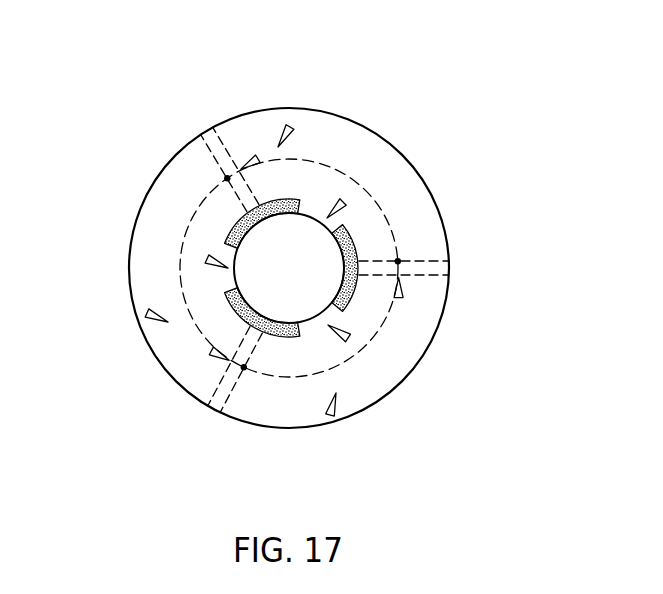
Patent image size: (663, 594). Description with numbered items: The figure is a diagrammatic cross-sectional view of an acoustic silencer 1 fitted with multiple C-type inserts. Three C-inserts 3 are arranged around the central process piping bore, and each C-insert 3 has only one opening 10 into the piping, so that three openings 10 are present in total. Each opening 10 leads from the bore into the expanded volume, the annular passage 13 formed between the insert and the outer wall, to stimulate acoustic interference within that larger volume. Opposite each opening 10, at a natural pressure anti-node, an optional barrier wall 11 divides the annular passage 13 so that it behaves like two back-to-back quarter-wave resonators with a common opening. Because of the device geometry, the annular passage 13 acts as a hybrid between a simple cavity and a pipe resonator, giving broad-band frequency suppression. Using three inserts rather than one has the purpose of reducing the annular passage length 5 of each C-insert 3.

The acoustic silencer 1 is at (180, 148).
The C-insert 3 is at (282, 198).
The passage length 5 is at (198, 210).
The opening 10 is at (207, 259).
The barrier wall 11 is at (218, 135).
The annular passage 13 is at (290, 127).